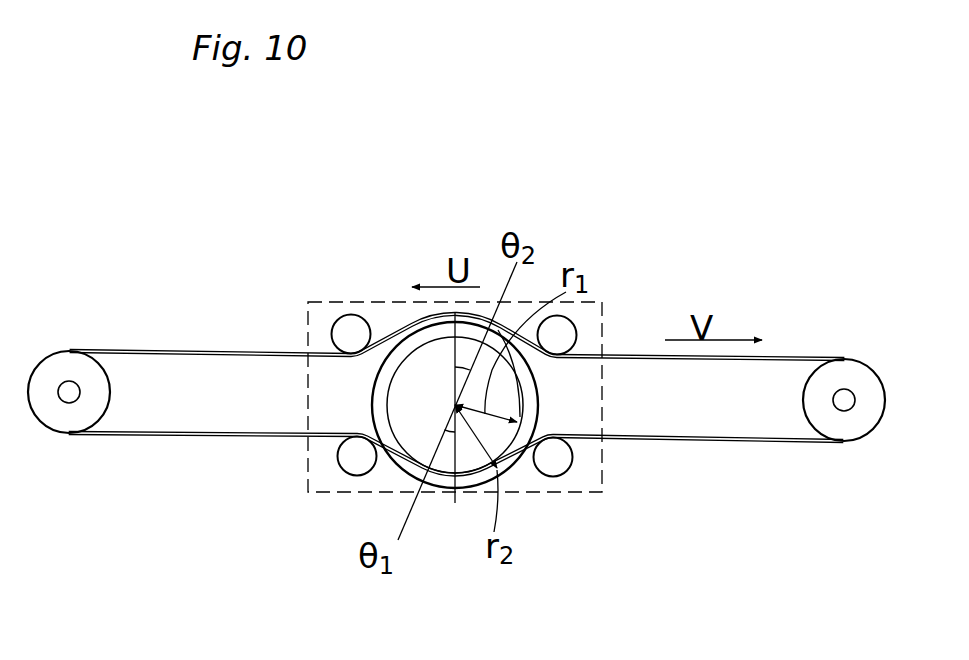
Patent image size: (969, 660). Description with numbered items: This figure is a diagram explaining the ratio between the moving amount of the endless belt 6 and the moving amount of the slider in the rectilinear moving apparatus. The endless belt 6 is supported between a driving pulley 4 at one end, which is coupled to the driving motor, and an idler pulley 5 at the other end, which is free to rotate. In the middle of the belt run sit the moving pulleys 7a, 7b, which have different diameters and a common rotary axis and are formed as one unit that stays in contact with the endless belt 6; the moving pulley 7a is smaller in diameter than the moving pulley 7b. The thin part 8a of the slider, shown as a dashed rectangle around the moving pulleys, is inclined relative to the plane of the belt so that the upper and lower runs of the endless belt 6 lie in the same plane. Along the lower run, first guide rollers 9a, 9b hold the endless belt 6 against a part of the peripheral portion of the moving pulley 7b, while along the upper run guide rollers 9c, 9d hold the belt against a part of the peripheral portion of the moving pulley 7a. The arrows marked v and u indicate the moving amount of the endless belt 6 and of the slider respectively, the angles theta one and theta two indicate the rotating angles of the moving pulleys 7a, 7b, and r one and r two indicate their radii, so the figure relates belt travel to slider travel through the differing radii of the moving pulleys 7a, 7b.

The driving pulley 4 is at (60, 372).
The idler pulley 5 is at (847, 373).
The endless belt 6 is at (208, 352).
The moving pulley 7a is at (465, 455).
The moving pulley 7b is at (430, 333).
The thin part of slider 8a is at (608, 472).
The first guide roller 9a is at (353, 457).
The first guide roller 9b is at (556, 462).
The guide roller 9c is at (350, 326).
The guide roller 9d is at (562, 332).